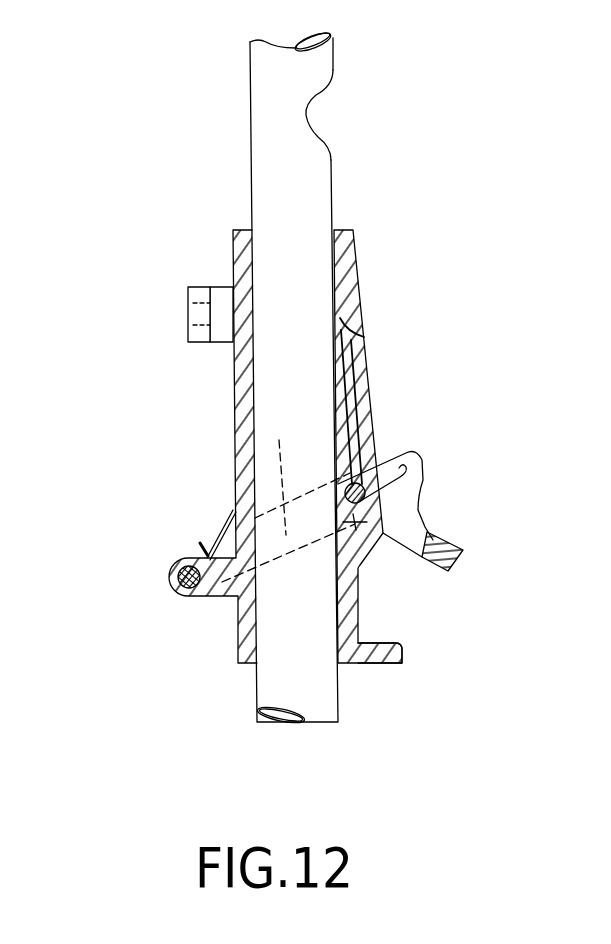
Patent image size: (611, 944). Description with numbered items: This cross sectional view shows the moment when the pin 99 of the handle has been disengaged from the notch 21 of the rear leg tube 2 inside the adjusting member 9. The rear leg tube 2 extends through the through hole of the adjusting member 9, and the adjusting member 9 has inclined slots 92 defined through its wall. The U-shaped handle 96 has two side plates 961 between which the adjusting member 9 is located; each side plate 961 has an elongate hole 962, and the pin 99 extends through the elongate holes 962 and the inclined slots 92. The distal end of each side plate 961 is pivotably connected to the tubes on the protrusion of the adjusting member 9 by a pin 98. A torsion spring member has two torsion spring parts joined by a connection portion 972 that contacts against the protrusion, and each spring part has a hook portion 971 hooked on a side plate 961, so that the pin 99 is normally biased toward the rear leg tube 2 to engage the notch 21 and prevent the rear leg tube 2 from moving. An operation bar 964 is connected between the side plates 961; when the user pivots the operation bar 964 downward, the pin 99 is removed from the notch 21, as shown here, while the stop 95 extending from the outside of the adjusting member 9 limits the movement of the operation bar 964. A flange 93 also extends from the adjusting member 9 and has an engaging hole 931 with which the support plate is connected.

The rear leg tube 2 is at (253, 177).
The notch 21 is at (331, 113).
The adjusting member 9 is at (337, 340).
The inclined slot 92 is at (370, 398).
The flange 93 is at (223, 332).
The engaging hole 931 is at (188, 315).
The stop 95 is at (383, 650).
The U-shaped handle 96 is at (424, 465).
The side plate 961 is at (287, 462).
The elongate hole 962 is at (364, 484).
The operation bar 964 is at (425, 528).
The hook portion 971 is at (200, 550).
The connection portion 972 is at (227, 523).
The pin 98 is at (198, 597).
The pin 99 is at (352, 505).